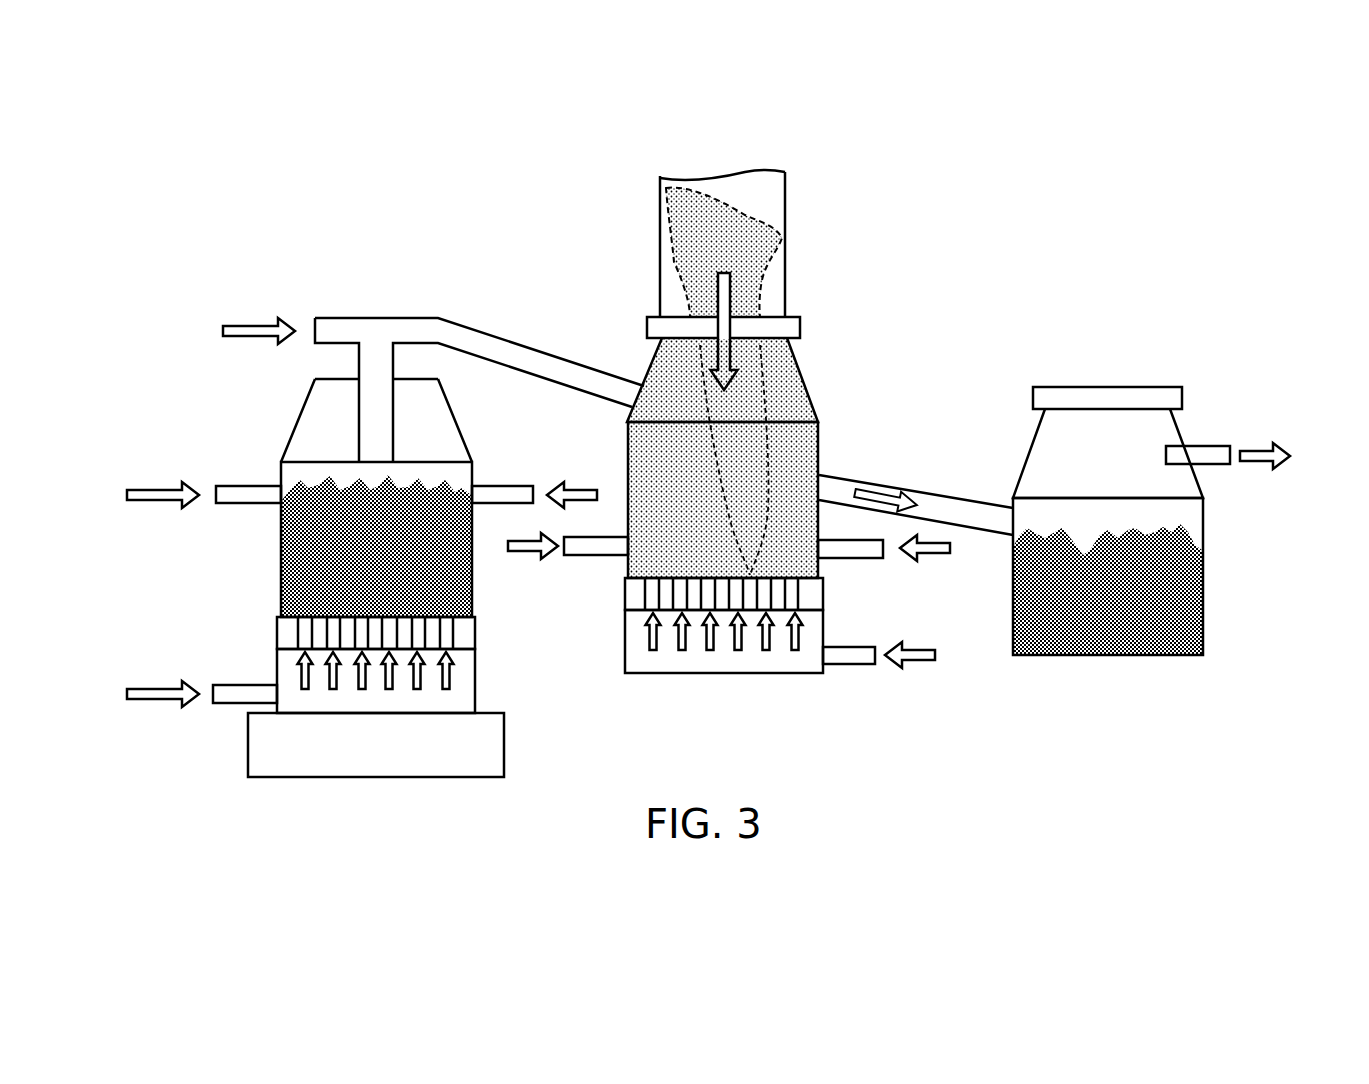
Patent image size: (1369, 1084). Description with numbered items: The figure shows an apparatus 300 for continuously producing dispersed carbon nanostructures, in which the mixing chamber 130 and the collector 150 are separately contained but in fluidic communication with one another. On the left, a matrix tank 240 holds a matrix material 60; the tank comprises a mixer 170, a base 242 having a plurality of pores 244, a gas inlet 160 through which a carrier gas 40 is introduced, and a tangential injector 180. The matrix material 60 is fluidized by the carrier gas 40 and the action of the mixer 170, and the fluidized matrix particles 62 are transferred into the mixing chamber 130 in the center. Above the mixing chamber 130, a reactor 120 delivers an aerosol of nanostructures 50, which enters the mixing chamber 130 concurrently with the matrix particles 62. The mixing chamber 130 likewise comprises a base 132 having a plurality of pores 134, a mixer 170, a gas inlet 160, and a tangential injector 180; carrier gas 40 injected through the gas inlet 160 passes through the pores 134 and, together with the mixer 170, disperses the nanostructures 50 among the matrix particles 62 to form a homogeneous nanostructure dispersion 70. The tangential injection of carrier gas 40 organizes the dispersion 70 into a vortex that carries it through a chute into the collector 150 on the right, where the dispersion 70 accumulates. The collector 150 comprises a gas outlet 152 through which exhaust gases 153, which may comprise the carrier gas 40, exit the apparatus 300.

The apparatus 300 is at (333, 200).
The matrix tank 240 is at (243, 408).
The carrier gas 40 is at (253, 325).
The matrix material 60 is at (297, 543).
The base 242 is at (277, 632).
The pores 244 is at (390, 612).
The tangential injector 180 is at (481, 486).
The gas inlet 160 is at (226, 705).
The mixer 170 is at (248, 760).
The reactor 120 is at (805, 233).
The aerosol of nanostructures 50 is at (728, 403).
The mixing chamber 130 is at (744, 447).
The fluidized matrix particles 62 is at (793, 470).
The base 132 is at (626, 597).
The pores 134 is at (712, 572).
The collector 150 is at (1205, 520).
The gas outlet 152 is at (1188, 445).
The exhaust gases 153 is at (1256, 448).
The nanostructure dispersion 70 is at (1183, 607).